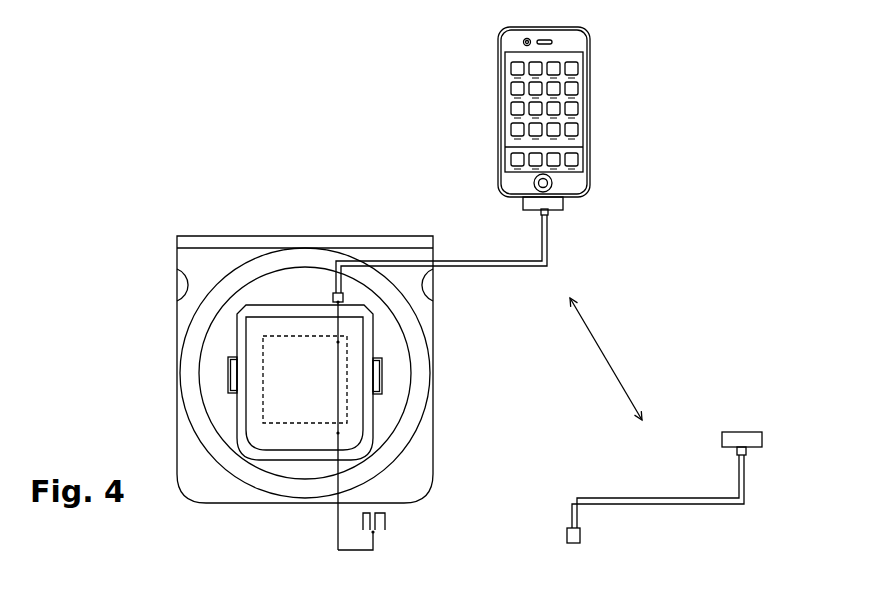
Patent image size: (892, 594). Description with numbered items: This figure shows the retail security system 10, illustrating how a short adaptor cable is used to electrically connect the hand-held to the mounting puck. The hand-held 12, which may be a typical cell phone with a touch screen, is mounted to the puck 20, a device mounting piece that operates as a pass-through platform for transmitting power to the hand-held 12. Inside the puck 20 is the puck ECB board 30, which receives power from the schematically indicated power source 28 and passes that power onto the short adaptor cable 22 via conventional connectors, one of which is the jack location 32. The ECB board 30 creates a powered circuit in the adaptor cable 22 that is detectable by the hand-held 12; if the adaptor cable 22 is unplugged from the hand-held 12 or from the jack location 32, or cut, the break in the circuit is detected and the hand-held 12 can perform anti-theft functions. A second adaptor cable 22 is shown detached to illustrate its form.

The retail security system 10 is at (311, 102).
The hand-held 12 is at (593, 123).
The puck 20 is at (375, 339).
The short adaptor cable 22 is at (550, 253).
The power source 28 is at (387, 518).
The puck ECB board 30 is at (267, 352).
The jack location 32 is at (333, 296).